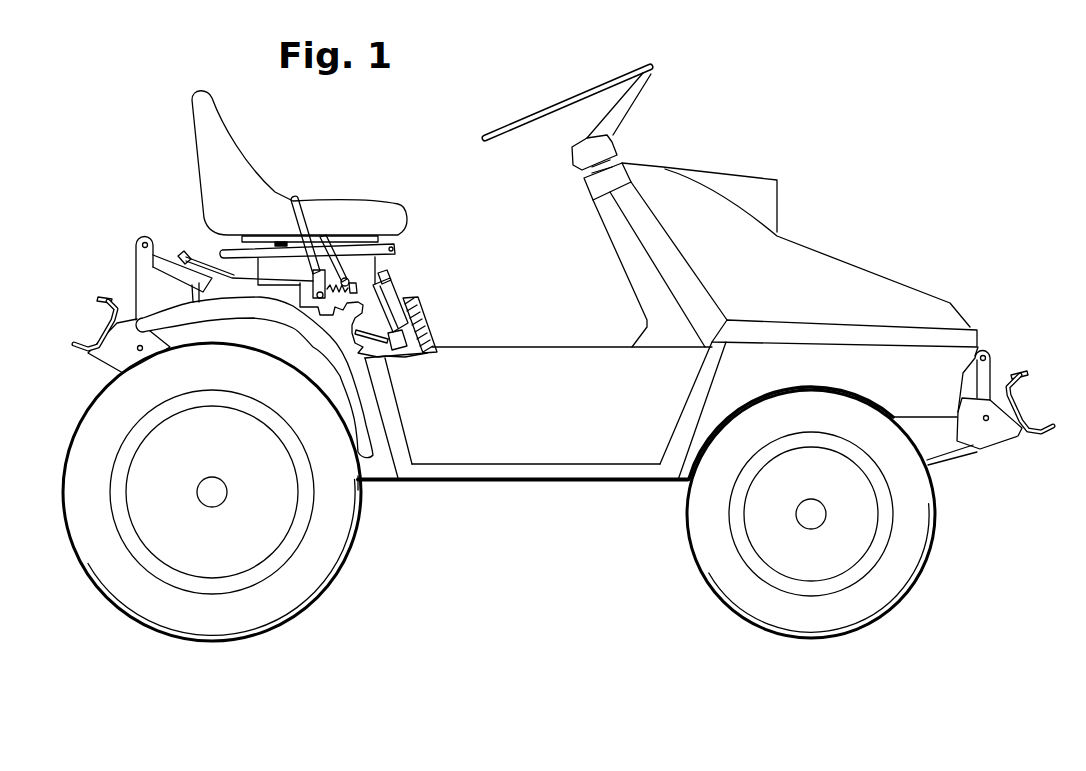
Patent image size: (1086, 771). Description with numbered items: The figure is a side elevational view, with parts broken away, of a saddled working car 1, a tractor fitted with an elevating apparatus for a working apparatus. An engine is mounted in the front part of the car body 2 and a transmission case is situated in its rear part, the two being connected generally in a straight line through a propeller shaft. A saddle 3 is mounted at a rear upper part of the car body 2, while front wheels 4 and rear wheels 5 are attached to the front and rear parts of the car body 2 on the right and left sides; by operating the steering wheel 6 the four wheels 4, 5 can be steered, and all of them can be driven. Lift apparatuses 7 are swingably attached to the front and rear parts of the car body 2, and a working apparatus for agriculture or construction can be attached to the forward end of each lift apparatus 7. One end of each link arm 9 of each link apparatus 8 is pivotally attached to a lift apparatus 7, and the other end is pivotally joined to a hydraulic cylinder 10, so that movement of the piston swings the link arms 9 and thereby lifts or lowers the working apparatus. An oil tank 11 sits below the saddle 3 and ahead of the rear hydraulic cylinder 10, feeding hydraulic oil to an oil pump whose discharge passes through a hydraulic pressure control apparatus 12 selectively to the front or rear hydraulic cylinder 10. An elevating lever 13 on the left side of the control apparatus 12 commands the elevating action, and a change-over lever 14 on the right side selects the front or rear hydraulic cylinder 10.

The saddled working car 1 is at (492, 212).
The car body 2 is at (623, 443).
The saddle 3 is at (333, 203).
The front wheels 4 is at (918, 541).
The rear wheels 5 is at (327, 553).
The steering wheel 6 is at (515, 115).
The lift apparatus 7 is at (100, 320).
The link apparatus 8 is at (135, 265).
The link arm 9 is at (155, 252).
The hydraulic cylinder 10 is at (233, 281).
The oil tank 11 is at (397, 284).
The hydraulic pressure control apparatus 12 is at (345, 297).
The elevating lever 13 is at (298, 201).
The change-over lever 14 is at (337, 243).